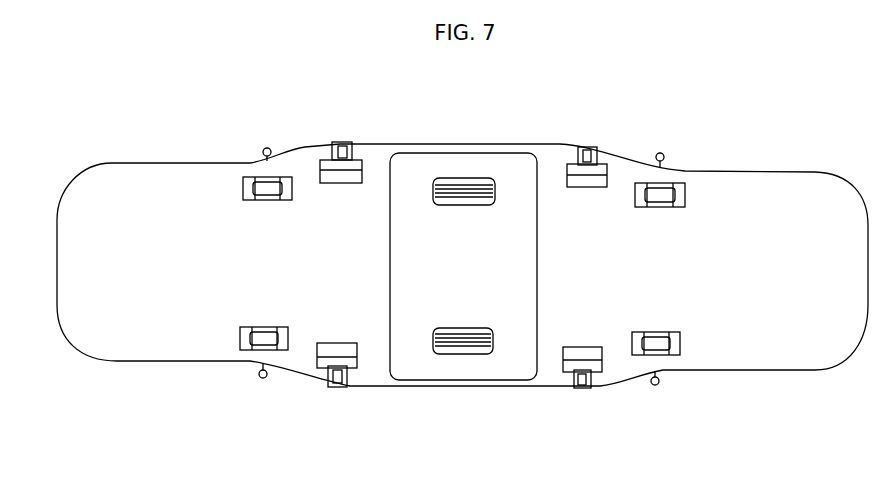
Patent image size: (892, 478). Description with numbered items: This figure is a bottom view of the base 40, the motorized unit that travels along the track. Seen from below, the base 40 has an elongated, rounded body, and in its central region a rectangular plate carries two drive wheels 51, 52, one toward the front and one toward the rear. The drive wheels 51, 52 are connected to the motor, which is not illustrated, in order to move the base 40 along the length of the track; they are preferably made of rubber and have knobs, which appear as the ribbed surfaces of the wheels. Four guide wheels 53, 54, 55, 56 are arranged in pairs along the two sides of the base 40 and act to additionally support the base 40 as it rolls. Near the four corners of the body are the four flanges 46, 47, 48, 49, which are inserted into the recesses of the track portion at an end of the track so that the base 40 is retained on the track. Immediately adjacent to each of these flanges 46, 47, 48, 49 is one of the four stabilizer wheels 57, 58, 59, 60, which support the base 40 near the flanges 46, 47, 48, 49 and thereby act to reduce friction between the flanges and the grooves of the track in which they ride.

The base 40 is at (108, 123).
The flange 46 is at (335, 145).
The flange 47 is at (590, 148).
The flange 48 is at (585, 389).
The flange 49 is at (328, 386).
The drive wheel 51 is at (465, 178).
The drive wheel 52 is at (463, 354).
The guide wheel 53 is at (253, 187).
The guide wheel 54 is at (253, 340).
The guide wheel 55 is at (677, 198).
The guide wheel 56 is at (680, 340).
The stabilizer wheel 57 is at (363, 178).
The stabilizer wheel 58 is at (607, 185).
The stabilizer wheel 59 is at (358, 348).
The stabilizer wheel 60 is at (563, 352).